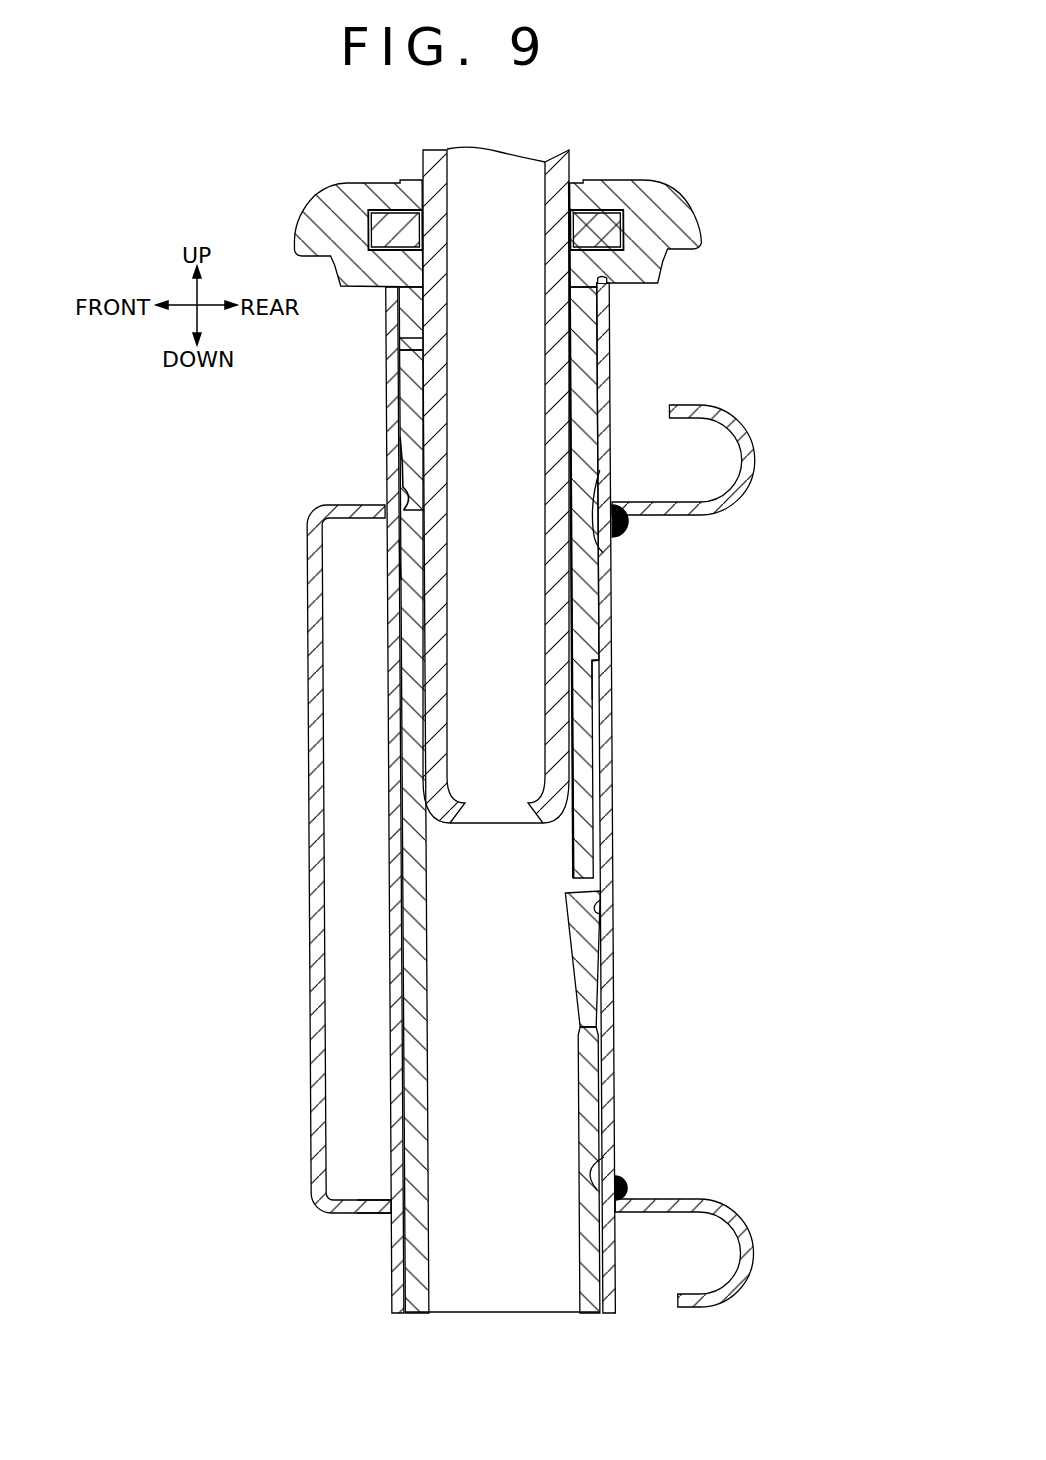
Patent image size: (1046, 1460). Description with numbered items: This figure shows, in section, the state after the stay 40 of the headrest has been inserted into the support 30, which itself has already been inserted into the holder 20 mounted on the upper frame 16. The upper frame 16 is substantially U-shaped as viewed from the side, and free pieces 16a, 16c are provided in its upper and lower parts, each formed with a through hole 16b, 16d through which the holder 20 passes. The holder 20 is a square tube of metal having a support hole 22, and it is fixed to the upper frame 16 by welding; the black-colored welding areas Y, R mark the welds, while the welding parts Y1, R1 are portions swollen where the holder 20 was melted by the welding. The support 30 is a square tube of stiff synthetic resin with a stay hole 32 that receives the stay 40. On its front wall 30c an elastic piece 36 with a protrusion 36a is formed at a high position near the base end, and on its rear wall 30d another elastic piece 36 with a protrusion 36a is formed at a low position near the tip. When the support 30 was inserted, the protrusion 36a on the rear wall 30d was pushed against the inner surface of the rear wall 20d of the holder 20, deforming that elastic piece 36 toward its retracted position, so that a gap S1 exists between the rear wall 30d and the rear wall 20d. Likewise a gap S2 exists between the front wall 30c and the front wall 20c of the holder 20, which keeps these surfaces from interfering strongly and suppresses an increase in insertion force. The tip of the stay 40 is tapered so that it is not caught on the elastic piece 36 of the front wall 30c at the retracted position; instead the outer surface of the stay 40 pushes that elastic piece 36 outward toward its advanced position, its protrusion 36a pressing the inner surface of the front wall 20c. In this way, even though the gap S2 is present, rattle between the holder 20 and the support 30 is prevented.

The upper frame 16 is at (320, 737).
The free piece 16a is at (678, 509).
The through hole 16b is at (385, 510).
The free piece 16c is at (677, 1203).
The through hole 16d is at (392, 1215).
The holder 20 is at (474, 795).
The front wall 20c is at (392, 893).
The rear wall 20d is at (605, 770).
The support hole 22 is at (608, 283).
The support 30 is at (291, 193).
The front wall 30c is at (412, 960).
The rear wall 30d is at (583, 737).
The stay hole 32 is at (583, 182).
The elastic piece 36 is at (408, 375).
The protrusion 36a is at (600, 905).
The stay 40 is at (552, 190).
The gap S1 is at (592, 660).
The gap S2 is at (401, 560).
The welding area Y is at (633, 533).
The welding part Y1 is at (603, 547).
The welding area R is at (632, 1180).
The welding part R1 is at (607, 1162).